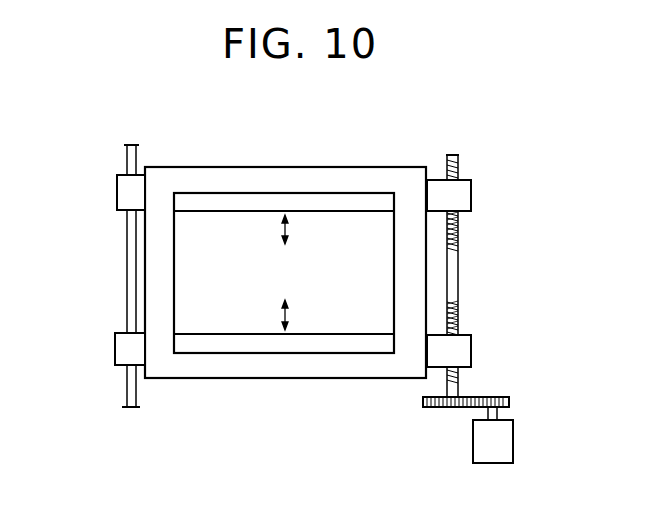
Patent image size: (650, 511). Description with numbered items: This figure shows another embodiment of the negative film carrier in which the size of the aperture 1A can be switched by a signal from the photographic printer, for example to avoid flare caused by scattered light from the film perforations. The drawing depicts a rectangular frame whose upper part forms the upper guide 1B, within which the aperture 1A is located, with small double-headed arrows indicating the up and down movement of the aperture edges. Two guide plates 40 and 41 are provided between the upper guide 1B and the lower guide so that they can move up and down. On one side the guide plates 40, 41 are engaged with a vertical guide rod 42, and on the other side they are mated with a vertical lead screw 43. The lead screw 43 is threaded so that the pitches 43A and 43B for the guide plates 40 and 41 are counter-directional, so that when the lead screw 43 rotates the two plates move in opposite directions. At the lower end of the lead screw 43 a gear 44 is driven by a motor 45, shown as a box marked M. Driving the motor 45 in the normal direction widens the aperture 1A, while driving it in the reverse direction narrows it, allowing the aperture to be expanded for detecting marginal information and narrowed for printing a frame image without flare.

The aperture 1A is at (343, 232).
The upper guide 1B is at (209, 186).
The guide plate 40 is at (472, 197).
The guide plate 41 is at (472, 351).
The guide rod 42 is at (126, 253).
The lead screw 43 is at (460, 274).
The pitch 43A is at (460, 232).
The pitch 43B is at (460, 318).
The gears 44 is at (453, 418).
The motor 45 is at (514, 440).